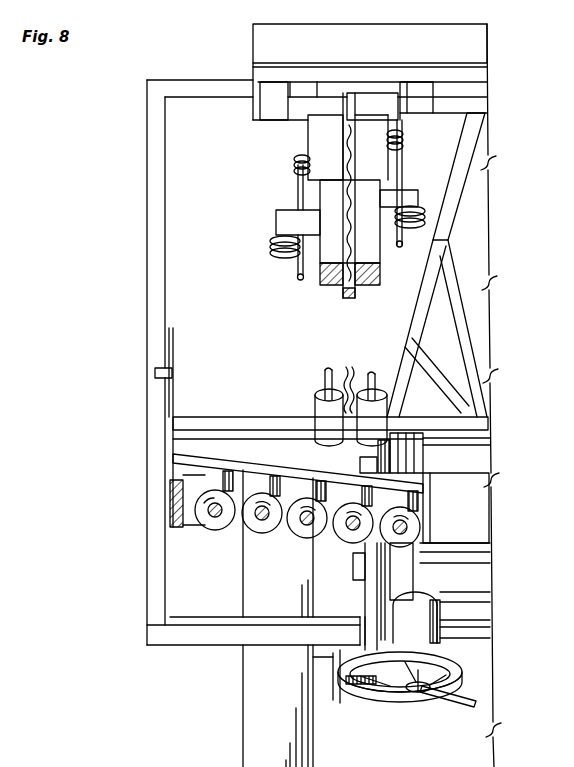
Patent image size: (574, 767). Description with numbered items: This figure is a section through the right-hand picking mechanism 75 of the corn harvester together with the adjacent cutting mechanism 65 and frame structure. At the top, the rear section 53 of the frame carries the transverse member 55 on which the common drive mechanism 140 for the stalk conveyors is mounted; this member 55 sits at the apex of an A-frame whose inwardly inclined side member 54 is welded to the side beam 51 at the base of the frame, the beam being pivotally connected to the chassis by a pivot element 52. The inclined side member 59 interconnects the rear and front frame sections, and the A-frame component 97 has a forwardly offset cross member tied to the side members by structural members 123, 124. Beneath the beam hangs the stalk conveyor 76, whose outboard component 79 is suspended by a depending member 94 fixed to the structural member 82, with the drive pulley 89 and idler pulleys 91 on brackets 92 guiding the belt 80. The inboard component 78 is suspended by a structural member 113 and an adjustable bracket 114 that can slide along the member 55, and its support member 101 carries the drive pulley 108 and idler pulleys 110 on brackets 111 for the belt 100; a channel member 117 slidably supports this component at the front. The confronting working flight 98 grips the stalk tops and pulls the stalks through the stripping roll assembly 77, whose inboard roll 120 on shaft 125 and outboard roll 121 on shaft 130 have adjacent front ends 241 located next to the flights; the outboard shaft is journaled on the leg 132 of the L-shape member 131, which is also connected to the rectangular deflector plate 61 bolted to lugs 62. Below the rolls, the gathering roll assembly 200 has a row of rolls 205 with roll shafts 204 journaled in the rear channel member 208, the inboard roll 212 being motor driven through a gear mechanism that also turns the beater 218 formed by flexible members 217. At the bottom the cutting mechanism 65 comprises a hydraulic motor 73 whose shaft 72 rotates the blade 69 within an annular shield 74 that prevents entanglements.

The drive mechanism 140 is at (386, 49).
The transverse member 55 is at (218, 80).
The rear section 53 is at (208, 116).
The inclined side member 59 is at (147, 215).
The drive pulley 89 is at (300, 160).
The structural member 113 is at (342, 152).
The adjustable bracket 114 is at (404, 118).
The drive pulley 108 is at (403, 143).
The endless belt 100 is at (404, 160).
The inwardly inclined side member 54 is at (480, 158).
The depending member 94 is at (294, 166).
The stalk conveyor 76 is at (298, 192).
The bracket 111 is at (418, 194).
The idler pulley 110 is at (425, 210).
The bracket 92 is at (276, 218).
The idler pulley 91 is at (270, 245).
The outboard component 79 is at (297, 270).
The endless belt 80 is at (297, 280).
The inboard component 78 is at (382, 262).
The picking mechanism 75 is at (318, 284).
The structural member 82 is at (340, 290).
The structural member 101 is at (380, 278).
The working flight 98 is at (342, 298).
The A-frame component 97 is at (410, 325).
The structural member 124 is at (466, 320).
The structural member 123 is at (452, 372).
The shaft 130 is at (318, 372).
The adjacent ends of the rolls 241 is at (335, 378).
The shaft 125 is at (368, 378).
The stripping roll assembly 77 is at (322, 385).
The lug 62 is at (155, 373).
The rectangular plate 61 is at (175, 400).
The L-shape member 131 is at (195, 425).
The gathering roll assembly 200 is at (215, 453).
The leg 132 is at (245, 444).
The outboard roll 121 is at (336, 447).
The rear channel member 208 is at (378, 455).
The inboard roll 120 is at (420, 440).
The beater 218 is at (425, 465).
The flexible member 217 is at (425, 480).
The inboard roll 212 is at (432, 508).
The roll 205 is at (222, 530).
The roll shaft 204 is at (268, 530).
The pivot element 52 is at (353, 565).
The channel member 117 is at (410, 565).
The side beam 51 is at (365, 592).
The hydraulic motor 73 is at (424, 624).
The annular shield 74 is at (455, 665).
The cutting mechanism 65 is at (452, 676).
The shaft 72 is at (422, 695).
The blade 69 is at (445, 712).